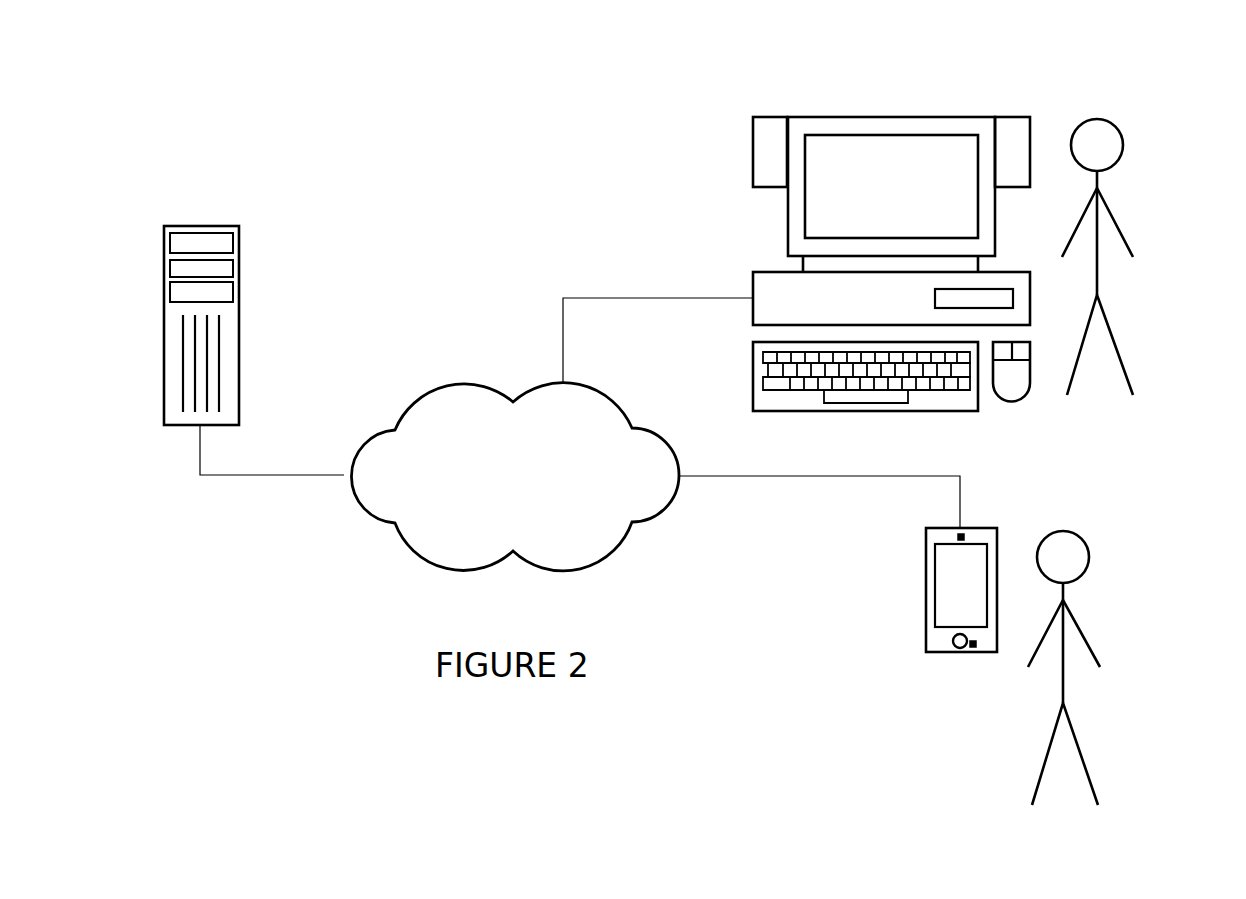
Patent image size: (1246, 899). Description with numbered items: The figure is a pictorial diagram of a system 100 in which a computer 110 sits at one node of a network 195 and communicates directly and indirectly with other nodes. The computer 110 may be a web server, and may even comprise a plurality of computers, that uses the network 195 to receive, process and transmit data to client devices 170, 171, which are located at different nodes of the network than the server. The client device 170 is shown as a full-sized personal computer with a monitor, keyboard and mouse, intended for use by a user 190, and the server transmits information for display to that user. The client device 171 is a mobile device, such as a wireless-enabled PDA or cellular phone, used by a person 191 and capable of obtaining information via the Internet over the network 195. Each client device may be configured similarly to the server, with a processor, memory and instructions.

The system 100 is at (271, 97).
The computer 110 is at (164, 241).
The client device 170 is at (910, 136).
The client device 171 is at (926, 552).
The user 190 is at (1123, 203).
The person 191 is at (1090, 599).
The network 195 is at (463, 382).